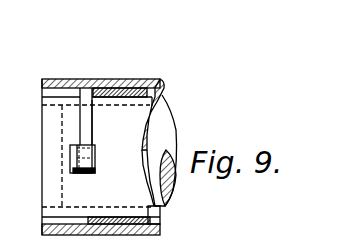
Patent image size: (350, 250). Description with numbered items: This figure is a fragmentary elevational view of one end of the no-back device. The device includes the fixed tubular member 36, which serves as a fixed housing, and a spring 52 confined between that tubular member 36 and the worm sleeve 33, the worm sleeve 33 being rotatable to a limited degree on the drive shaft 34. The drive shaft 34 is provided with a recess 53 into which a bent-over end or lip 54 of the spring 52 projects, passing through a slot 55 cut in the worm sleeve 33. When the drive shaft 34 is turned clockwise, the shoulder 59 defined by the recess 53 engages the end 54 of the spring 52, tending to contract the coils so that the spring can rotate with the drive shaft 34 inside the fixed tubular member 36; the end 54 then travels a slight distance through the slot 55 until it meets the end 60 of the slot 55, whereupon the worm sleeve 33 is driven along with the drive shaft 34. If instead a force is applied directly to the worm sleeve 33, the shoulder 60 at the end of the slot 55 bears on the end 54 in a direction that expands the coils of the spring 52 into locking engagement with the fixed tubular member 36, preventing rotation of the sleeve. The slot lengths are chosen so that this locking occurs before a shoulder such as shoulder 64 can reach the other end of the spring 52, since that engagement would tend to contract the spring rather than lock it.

The worm sleeve 33 is at (152, 103).
The drive shaft 34 is at (162, 130).
The fixed tubular member 36 is at (138, 88).
The spring 52 is at (86, 100).
The recess 53 is at (86, 175).
The bent-over end 54 is at (96, 169).
The slot 55 is at (94, 149).
The shoulder 59 is at (73, 126).
The end of the slot 60 is at (79, 175).
The shoulder 64 is at (92, 142).